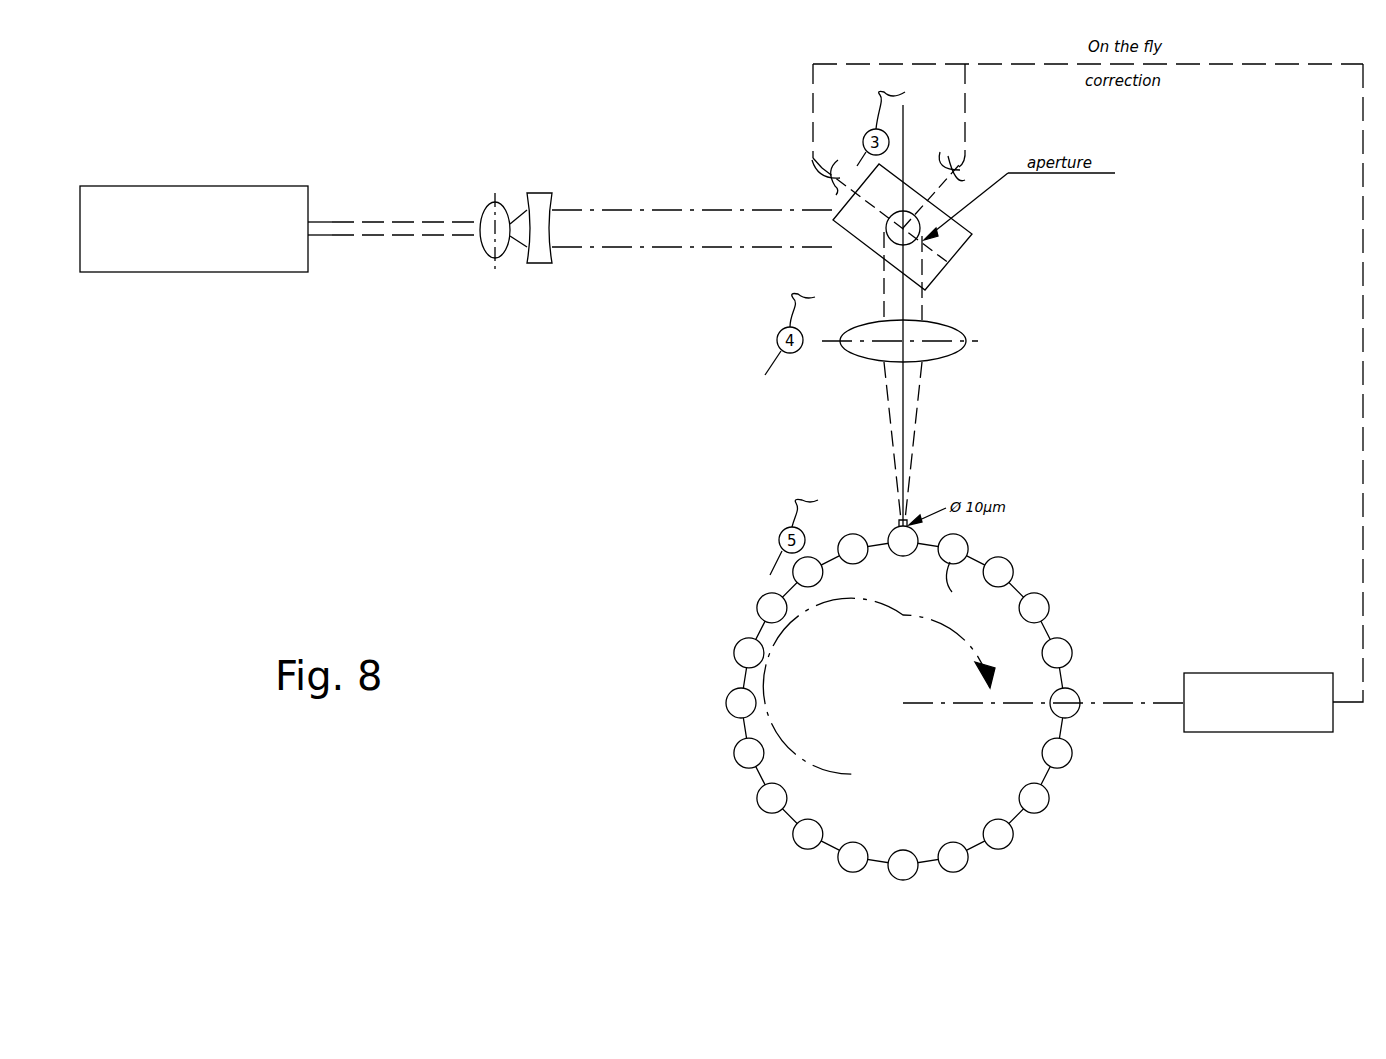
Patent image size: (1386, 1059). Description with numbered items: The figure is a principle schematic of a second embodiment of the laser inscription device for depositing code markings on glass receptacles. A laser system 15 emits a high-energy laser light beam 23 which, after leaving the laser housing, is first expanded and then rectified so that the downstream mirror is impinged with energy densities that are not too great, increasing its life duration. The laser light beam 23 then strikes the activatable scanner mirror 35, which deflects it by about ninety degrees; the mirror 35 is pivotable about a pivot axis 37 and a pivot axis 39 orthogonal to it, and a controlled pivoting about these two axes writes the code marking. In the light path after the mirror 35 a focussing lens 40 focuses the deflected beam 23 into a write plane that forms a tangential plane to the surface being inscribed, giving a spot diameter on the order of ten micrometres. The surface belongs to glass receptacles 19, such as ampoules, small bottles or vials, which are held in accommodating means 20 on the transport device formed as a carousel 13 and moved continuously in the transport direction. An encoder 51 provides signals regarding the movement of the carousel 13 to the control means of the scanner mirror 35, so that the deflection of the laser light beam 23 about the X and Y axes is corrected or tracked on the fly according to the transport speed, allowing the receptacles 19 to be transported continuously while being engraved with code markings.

The laser system 15 is at (200, 274).
The laser light beam 23 is at (399, 222).
The scanner mirror 35 is at (958, 251).
The pivot axis 37 is at (808, 172).
The pivot axis 39 is at (940, 152).
The focussing lens 40 is at (955, 326).
The carousel 13 is at (913, 703).
The glass receptacles 19 is at (1012, 565).
The accommodating means 20 is at (1018, 613).
The encoder 51 is at (1224, 734).